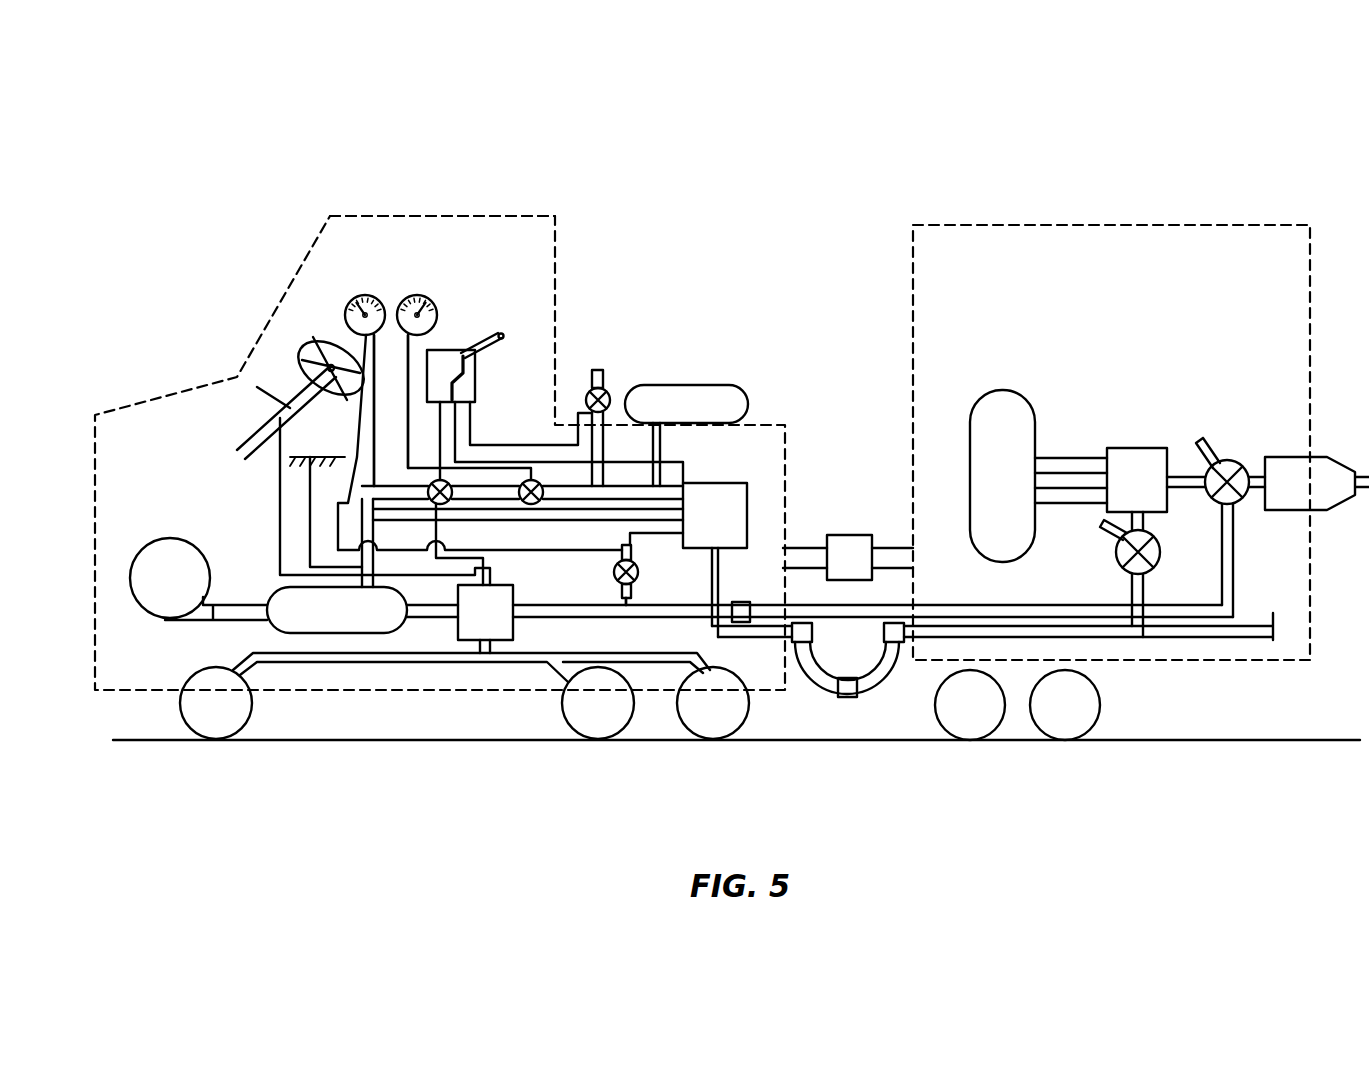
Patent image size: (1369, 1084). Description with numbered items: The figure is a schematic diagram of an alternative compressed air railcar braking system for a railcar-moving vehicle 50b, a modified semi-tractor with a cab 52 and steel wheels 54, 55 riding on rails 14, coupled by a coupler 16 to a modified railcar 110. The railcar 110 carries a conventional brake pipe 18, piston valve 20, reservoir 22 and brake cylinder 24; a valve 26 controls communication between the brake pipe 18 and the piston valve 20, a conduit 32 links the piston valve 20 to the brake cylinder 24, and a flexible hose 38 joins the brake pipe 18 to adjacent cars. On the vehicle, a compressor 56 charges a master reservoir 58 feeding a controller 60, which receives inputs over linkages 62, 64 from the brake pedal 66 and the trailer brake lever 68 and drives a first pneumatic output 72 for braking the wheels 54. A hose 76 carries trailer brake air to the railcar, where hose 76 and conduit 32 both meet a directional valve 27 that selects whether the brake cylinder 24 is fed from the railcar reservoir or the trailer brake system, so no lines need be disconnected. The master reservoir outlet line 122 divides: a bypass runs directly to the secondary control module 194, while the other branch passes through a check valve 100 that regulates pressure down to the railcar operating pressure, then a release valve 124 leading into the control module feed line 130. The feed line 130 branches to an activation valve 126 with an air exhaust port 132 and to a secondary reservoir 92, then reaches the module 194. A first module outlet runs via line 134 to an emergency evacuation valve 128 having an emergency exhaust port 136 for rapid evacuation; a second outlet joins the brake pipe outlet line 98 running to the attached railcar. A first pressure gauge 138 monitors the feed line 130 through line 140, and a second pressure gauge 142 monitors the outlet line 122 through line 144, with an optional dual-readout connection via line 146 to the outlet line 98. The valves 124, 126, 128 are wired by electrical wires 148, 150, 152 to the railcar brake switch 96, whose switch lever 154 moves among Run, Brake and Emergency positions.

The rails 14 is at (423, 742).
The coupler 16 is at (853, 553).
The brake pipe 18 is at (1253, 625).
The piston valve 20 is at (1149, 497).
The reservoir 22 is at (1016, 487).
The brake cylinder 24 is at (1316, 496).
The valve 26 is at (1155, 548).
The directional valve 27 is at (1227, 459).
The conduit 32 is at (1187, 475).
The flexible hose 38 is at (816, 680).
The railcar-moving vehicle 50b is at (499, 207).
The cab 52 is at (435, 250).
The steel wheels 54 is at (212, 712).
The steel wheels 55 is at (713, 707).
The compressor 56 is at (181, 592).
The master reservoir 58 is at (351, 624).
The controller 60 is at (503, 624).
The linkage 62 is at (280, 533).
The linkage 64 is at (279, 478).
The brake pedal 66 is at (330, 440).
The trailer brake lever 68 is at (262, 396).
The first pneumatic output 72 is at (433, 657).
The hose 76 is at (848, 610).
The secondary reservoir 92 is at (701, 416).
The railcar brake switch 96 is at (465, 336).
The brake pipe outlet line 98 is at (718, 583).
The check valve 100 is at (450, 502).
The modified railcar 110 is at (1080, 220).
The master reservoir outlet line 122 is at (375, 522).
The release valve 124 is at (523, 480).
The activation valve 126 is at (609, 396).
The emergency evacuation valve 128 is at (639, 572).
The control module feed line 130 is at (628, 487).
The air exhaust port 132 is at (597, 370).
The line 134 is at (627, 545).
The emergency exhaust port 136 is at (621, 597).
The first pressure gauge 138 is at (433, 297).
The line 140 is at (402, 373).
The second pressure gauge 142 is at (347, 305).
The line 144 is at (343, 340).
The line 146 is at (360, 487).
The electrical wire 148 is at (455, 432).
The electrical wire 150 is at (475, 398).
The electrical wire 152 is at (531, 552).
The switch lever 154 is at (503, 338).
The secondary control module 194 is at (735, 531).